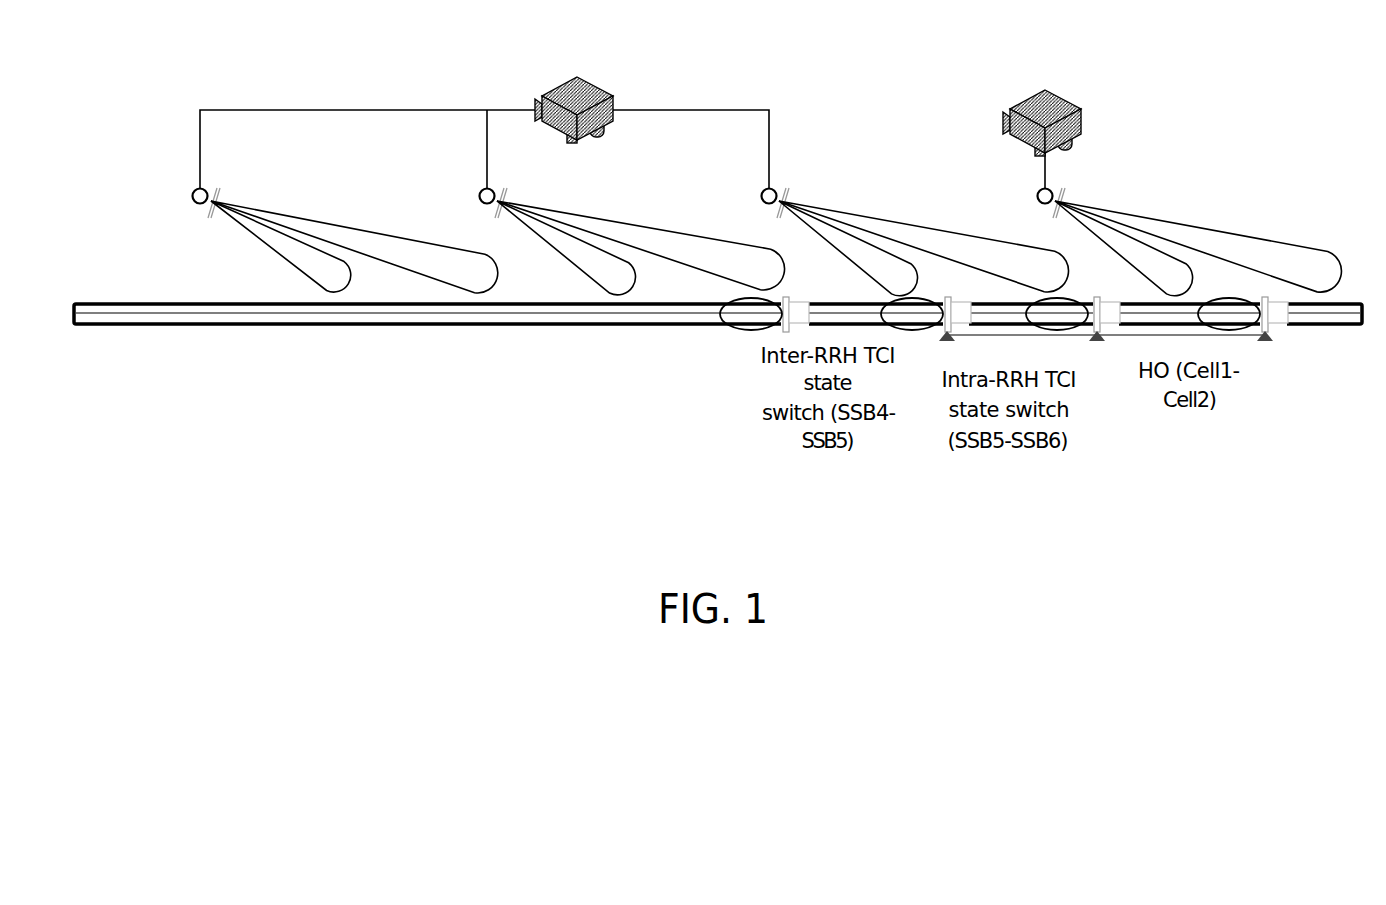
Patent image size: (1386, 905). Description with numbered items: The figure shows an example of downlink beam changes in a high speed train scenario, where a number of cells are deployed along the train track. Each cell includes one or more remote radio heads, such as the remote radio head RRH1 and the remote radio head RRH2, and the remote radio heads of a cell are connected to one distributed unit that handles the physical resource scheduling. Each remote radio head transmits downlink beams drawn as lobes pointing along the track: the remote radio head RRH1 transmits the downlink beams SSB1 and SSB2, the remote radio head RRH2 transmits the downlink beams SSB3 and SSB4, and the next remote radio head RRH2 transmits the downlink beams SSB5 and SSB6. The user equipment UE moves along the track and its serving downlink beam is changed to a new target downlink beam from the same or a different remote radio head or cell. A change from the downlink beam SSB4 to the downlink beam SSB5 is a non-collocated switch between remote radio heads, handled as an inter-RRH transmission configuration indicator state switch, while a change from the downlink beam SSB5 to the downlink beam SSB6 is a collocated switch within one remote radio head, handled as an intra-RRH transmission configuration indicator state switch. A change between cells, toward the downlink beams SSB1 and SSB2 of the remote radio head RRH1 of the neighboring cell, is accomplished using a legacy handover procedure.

The remote radio head RRH1 is at (589, 201).
The remote radio head RRH2 is at (588, 201).
The downlink beam SSB1 is at (700, 244).
The downlink beam SSB2 is at (776, 239).
The downlink beam SSB3 is at (564, 244).
The downlink beam SSB4 is at (640, 238).
The downlink beam SSB5 is at (846, 244).
The downlink beam SSB6 is at (923, 239).
The user equipment UE is at (718, 331).